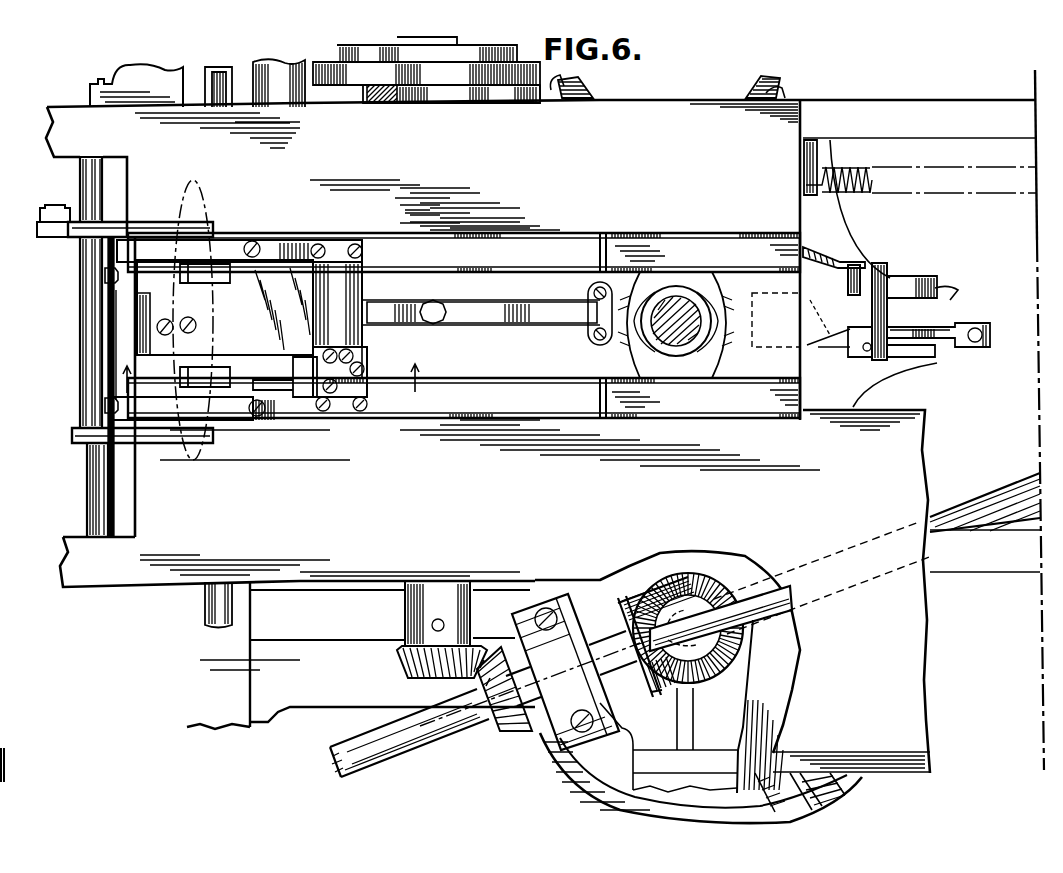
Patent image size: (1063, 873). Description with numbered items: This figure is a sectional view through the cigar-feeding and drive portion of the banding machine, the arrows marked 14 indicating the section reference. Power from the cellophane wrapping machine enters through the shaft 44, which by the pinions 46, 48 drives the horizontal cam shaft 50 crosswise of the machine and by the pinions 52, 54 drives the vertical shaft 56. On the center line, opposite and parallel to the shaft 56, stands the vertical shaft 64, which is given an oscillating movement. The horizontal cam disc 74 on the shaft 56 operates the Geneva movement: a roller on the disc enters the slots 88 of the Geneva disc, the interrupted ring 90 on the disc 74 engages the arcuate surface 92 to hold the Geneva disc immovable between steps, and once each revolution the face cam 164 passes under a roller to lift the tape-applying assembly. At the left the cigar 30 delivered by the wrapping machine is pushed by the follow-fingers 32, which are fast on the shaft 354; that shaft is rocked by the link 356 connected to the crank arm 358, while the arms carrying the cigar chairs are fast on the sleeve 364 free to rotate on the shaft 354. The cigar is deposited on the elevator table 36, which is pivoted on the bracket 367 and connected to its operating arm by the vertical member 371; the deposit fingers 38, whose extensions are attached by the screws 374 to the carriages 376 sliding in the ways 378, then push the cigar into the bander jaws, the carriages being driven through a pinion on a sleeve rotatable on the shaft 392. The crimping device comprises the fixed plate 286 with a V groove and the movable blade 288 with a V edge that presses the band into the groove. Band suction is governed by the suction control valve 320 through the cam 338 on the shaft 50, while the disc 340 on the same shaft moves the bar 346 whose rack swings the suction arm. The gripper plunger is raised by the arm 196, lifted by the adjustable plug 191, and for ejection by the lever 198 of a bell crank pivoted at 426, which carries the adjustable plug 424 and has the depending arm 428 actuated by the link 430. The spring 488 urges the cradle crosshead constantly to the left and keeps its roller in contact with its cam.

The direction arrow / section reference 14 is at (428, 355).
The cigar 30 is at (212, 204).
The follow-fingers 32 is at (214, 230).
The elevator table 36 is at (295, 290).
The deposit fingers 38 is at (105, 275).
The shaft 44 is at (366, 755).
The pinion 46 is at (497, 736).
The pinion 48 is at (398, 666).
The horizontal cam shaft 50 is at (410, 600).
The pinion 52 is at (634, 604).
The pinion 54 is at (650, 595).
The vertical shaft 56 is at (700, 610).
The vertical shaft 64 is at (684, 342).
The cam disc 74 is at (566, 800).
The slots 88 is at (560, 80).
The interrupted ring 90 is at (763, 690).
The arcuate surface 92 is at (585, 92).
The face cam 164 is at (816, 802).
The adjustable plug 191 is at (451, 321).
The arm 196 is at (505, 322).
The lever 198 is at (926, 322).
The fixed plate 286 is at (340, 382).
The movable blade 288 is at (300, 412).
The suction control valve 320 is at (128, 80).
The cam 338 is at (489, 62).
The disc 340 is at (541, 87).
The bar 346 is at (382, 104).
The shaft 354 is at (80, 186).
The link 356 is at (115, 216).
The crank arm 358 is at (40, 236).
The sleeve 364 is at (90, 360).
The bracket 367 is at (147, 348).
The vertical member 371 is at (140, 330).
The screws 374 is at (260, 245).
The carriages 376 is at (505, 247).
The ways 378 is at (688, 246).
The shaft 392 is at (217, 67).
The adjustable plug 424 is at (977, 340).
The pivot 426 is at (886, 276).
The depending arm 428 is at (850, 283).
The link 430 is at (826, 256).
The spring 488 is at (843, 170).